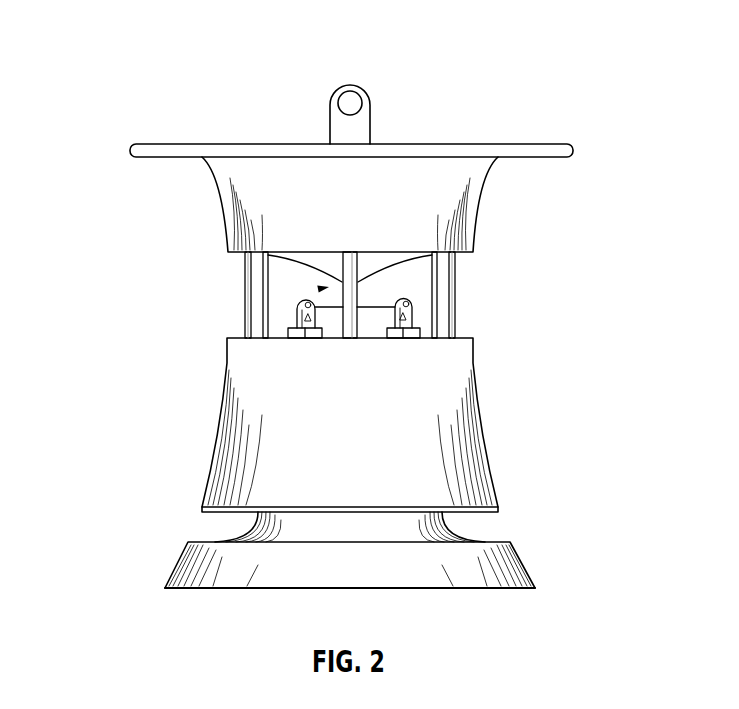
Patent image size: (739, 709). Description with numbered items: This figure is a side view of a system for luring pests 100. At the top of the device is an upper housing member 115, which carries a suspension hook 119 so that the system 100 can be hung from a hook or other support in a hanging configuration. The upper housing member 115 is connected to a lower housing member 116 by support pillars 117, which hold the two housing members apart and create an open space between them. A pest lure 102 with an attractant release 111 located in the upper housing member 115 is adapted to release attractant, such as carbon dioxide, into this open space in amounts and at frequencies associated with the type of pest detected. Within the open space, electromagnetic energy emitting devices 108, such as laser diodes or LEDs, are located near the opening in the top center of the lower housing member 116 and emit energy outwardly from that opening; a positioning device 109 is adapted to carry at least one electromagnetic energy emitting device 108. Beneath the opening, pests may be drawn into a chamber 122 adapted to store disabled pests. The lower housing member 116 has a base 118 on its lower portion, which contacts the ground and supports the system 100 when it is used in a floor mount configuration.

The system for luring pests 100 is at (126, 97).
The pest lure 102 is at (297, 306).
The electromagnetic energy emitting device 108 is at (306, 339).
The positioning device 109 is at (412, 306).
The attractant release 111 is at (320, 289).
The upper housing member 115 is at (576, 148).
The lower housing member 116 is at (218, 428).
The support pillars 117 is at (245, 278).
The base 118 is at (178, 567).
The suspension hook 119 is at (366, 89).
The chamber 122 is at (462, 533).